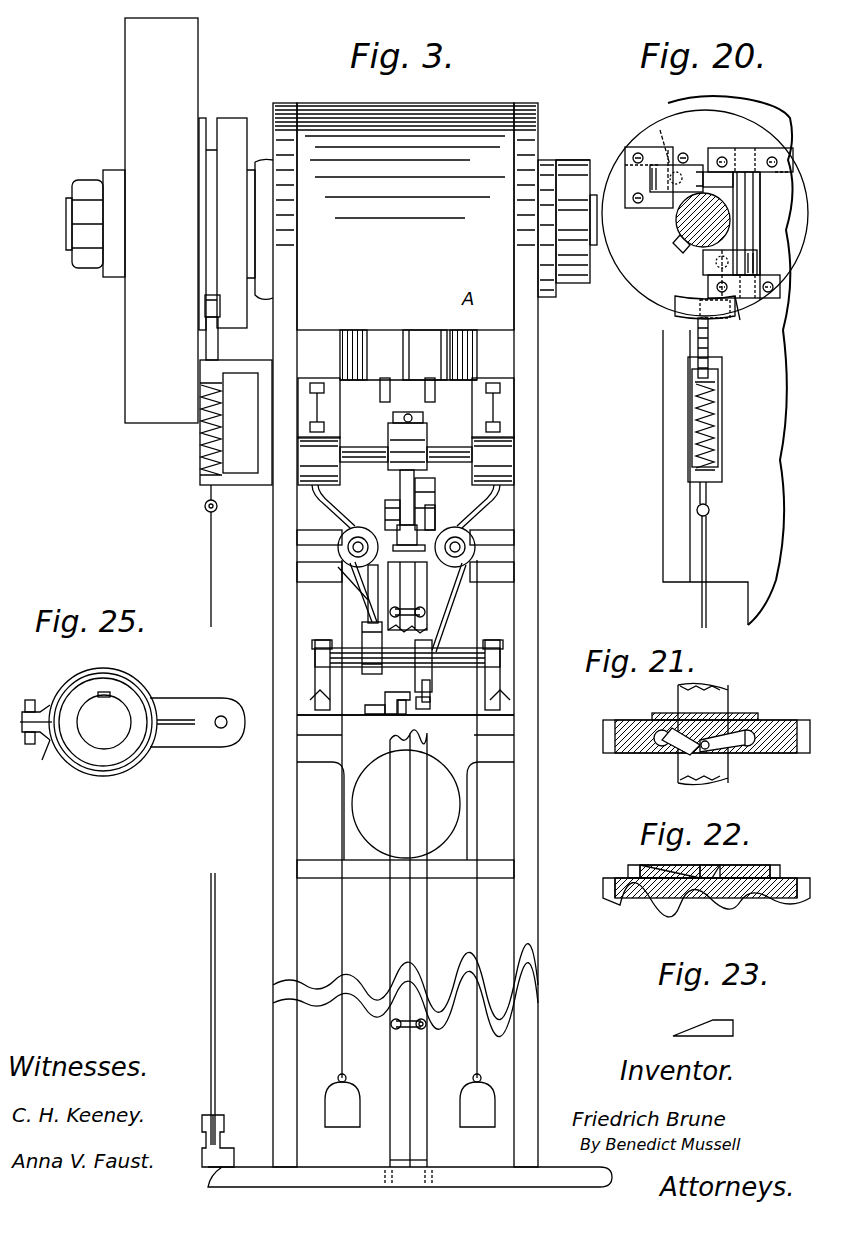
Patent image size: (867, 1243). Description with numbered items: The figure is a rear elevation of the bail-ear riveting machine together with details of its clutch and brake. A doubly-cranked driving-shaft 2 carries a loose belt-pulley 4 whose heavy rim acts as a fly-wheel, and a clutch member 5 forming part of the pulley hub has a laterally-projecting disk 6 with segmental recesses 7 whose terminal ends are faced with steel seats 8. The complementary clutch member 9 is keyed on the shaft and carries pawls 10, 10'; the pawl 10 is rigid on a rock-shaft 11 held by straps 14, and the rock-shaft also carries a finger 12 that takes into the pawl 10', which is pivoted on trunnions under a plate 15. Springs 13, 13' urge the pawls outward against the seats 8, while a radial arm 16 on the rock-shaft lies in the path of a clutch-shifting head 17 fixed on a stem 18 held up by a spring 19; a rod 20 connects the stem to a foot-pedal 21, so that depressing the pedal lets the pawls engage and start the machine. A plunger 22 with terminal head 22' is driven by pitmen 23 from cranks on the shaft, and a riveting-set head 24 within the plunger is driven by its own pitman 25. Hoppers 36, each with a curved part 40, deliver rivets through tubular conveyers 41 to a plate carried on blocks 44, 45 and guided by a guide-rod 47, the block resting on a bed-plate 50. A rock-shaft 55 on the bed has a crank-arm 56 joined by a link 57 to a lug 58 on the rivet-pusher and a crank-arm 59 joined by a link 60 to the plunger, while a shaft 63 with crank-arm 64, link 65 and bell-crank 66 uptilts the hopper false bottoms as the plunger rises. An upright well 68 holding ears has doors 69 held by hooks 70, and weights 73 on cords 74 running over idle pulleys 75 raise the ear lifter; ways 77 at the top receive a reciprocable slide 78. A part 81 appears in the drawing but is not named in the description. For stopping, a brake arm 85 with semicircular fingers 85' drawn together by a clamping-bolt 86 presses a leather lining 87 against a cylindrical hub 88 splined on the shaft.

In FIG. 3, the driving-shaft 2 is at (66, 228).
In FIG. 20, the driving-shaft 2 is at (682, 218).
In FIG. 3, the belt-pulley 4 is at (161, 220).
In FIG. 3, the clutch member 5 is at (206, 206).
In FIG. 22, the clutch member 5 is at (762, 878).
In FIG. 3, the disk 6 is at (215, 225).
In FIG. 22, the segmental recesses 7 is at (700, 865).
In FIG. 22, the steel seats 8 is at (714, 865).
In FIG. 3, the complementary clutch member 9 is at (240, 118).
In FIG. 20, the complementary clutch member 9 is at (776, 236).
In FIG. 20, the pawl 10 is at (712, 262).
In FIG. 21, the pawl 10 is at (727, 751).
In FIG. 20, the pawl 10' is at (680, 154).
In FIG. 21, the pawl 10' is at (675, 760).
In FIG. 20, the rock-shaft 11 is at (748, 208).
In FIG. 21, the rock-shaft 11 is at (750, 745).
In FIG. 20, the finger 12 is at (712, 172).
In FIG. 21, the finger 12 is at (725, 750).
In FIG. 20, the spring 13 is at (692, 274).
In FIG. 20, the spring 13' is at (654, 147).
In FIG. 21, the spring 13' is at (700, 703).
In FIG. 20, the straps 14 is at (732, 148).
In FIG. 20, the plate 15 is at (630, 205).
In FIG. 20, the radial arm 16 is at (740, 300).
In FIG. 3, the clutch-shifting head 17 is at (216, 306).
In FIG. 20, the clutch-shifting head 17 is at (680, 302).
In FIG. 23, the clutch-shifting head 17 is at (722, 1020).
In FIG. 3, the stem 18 is at (218, 353).
In FIG. 20, the stem 18 is at (710, 344).
In FIG. 3, the spring 19 is at (200, 440).
In FIG. 20, the spring 19 is at (712, 418).
In FIG. 3, the rod 20 is at (213, 562).
In FIG. 20, the rod 20 is at (708, 553).
In FIG. 3, the foot-pedal 21 is at (224, 1132).
In FIG. 20, the foot-pedal 21 is at (625, 168).
In FIG. 3, the plunger 22 is at (500, 604).
In FIG. 3, the terminal head 22' is at (427, 592).
In FIG. 3, the pitmen 23 is at (352, 354).
In FIG. 3, the riveting-set head 24 is at (428, 402).
In FIG. 3, the pitman 25 is at (408, 354).
In FIG. 3, the hoppers 36 is at (310, 410).
In FIG. 3, the curved part of the hopper 40 is at (312, 472).
In FIG. 3, the tubular conveyers 41 is at (330, 505).
In FIG. 3, the block 44 is at (385, 695).
In FIG. 3, the block 45 is at (372, 715).
In FIG. 3, the guide-rod 47 is at (403, 714).
In FIG. 3, the bed-plate 50 is at (405, 728).
In FIG. 3, the rock-shaft 55 is at (456, 660).
In FIG. 3, the crank-arm 56 is at (432, 676).
In FIG. 3, the link 57 is at (432, 692).
In FIG. 3, the lug 58 is at (432, 706).
In FIG. 3, the crank-arm 59 is at (368, 650).
In FIG. 3, the link 60 is at (368, 604).
In FIG. 3, the shaft 63 is at (362, 450).
In FIG. 3, the crank-arm 64 is at (400, 482).
In FIG. 3, the link 65 is at (425, 494).
In FIG. 3, the bell-crank 66 is at (435, 514).
In FIG. 3, the well 68 is at (427, 916).
In FIG. 3, the hinged members 69 is at (390, 1056).
In FIG. 3, the hooks 70 is at (396, 606).
In FIG. 3, the weights 73 is at (410, 1100).
In FIG. 3, the cords 74 is at (342, 832).
In FIG. 3, the idle pulleys 75 is at (338, 548).
In FIG. 3, the ways 77 is at (409, 555).
In FIG. 3, the slide 78 is at (407, 535).
In FIG. 3, the block 81 is at (385, 512).
In FIG. 3, the arm 85 is at (567, 236).
In FIG. 25, the arm 85 is at (197, 735).
In FIG. 3, the fingers 85' is at (573, 142).
In FIG. 25, the fingers 85' is at (99, 721).
In FIG. 25, the clamping-bolt 86 is at (30, 704).
In FIG. 25, the leather 87 is at (135, 680).
In FIG. 25, the cylindrical hub 88 is at (128, 752).